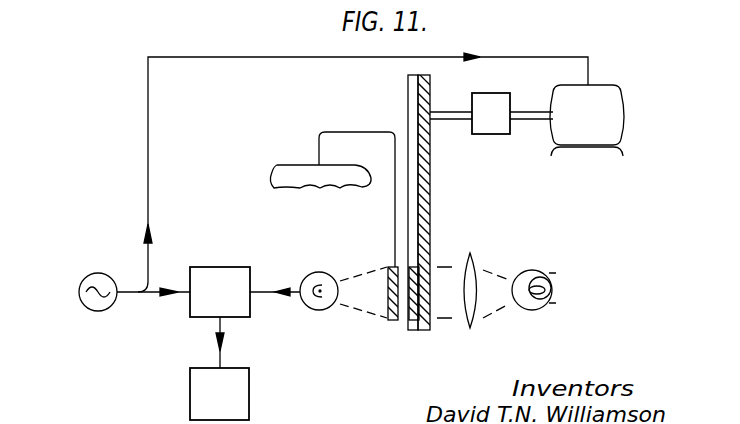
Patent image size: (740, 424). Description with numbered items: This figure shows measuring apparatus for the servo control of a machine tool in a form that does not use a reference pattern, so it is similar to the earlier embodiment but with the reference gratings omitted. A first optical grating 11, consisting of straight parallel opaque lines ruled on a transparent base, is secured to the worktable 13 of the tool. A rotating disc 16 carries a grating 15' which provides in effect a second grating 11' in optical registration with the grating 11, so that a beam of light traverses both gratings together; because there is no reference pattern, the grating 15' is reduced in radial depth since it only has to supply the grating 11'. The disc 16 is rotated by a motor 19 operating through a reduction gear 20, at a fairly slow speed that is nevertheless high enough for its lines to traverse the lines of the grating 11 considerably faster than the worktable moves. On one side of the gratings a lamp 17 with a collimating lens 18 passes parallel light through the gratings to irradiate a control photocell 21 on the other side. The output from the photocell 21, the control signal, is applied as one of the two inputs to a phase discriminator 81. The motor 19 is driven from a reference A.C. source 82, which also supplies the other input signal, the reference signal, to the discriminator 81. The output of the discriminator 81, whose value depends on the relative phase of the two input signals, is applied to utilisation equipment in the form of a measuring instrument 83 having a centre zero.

The first optical grating 11 is at (388, 299).
The second grating 11' is at (412, 299).
The worktable 13 is at (289, 165).
The grating 15' is at (390, 199).
The disc 16 is at (430, 237).
The lamp 17 is at (531, 270).
The collimating lens 18 is at (477, 263).
The motor 19 is at (587, 120).
The reduction gear 20 is at (491, 113).
The control photocell 21 is at (303, 272).
The phase discriminator 81 is at (245, 317).
The reference A.C. source 82 is at (96, 273).
The measuring instrument 83 is at (219, 394).